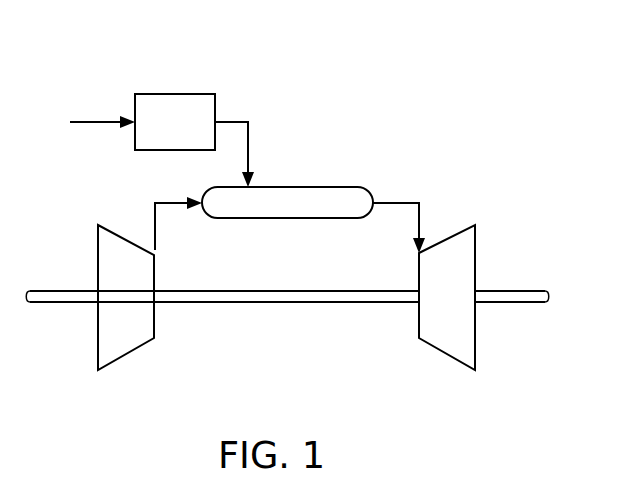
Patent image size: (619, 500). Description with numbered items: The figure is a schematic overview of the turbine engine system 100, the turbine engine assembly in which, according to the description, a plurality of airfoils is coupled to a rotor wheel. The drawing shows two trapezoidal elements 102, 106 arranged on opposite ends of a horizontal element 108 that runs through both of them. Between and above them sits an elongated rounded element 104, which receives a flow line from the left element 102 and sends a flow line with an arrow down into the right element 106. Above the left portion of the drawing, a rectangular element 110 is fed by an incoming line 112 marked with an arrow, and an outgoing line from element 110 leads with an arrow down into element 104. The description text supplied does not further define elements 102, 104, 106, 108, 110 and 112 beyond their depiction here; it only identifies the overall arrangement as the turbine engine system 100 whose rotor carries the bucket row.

The turbine engine system 100 is at (478, 118).
The compressor 102 is at (98, 243).
The combustor 104 is at (310, 185).
The turbine 106 is at (478, 241).
The shaft 108 is at (287, 307).
The fuel supply system 110 is at (177, 93).
The fuel inlet 112 is at (98, 118).